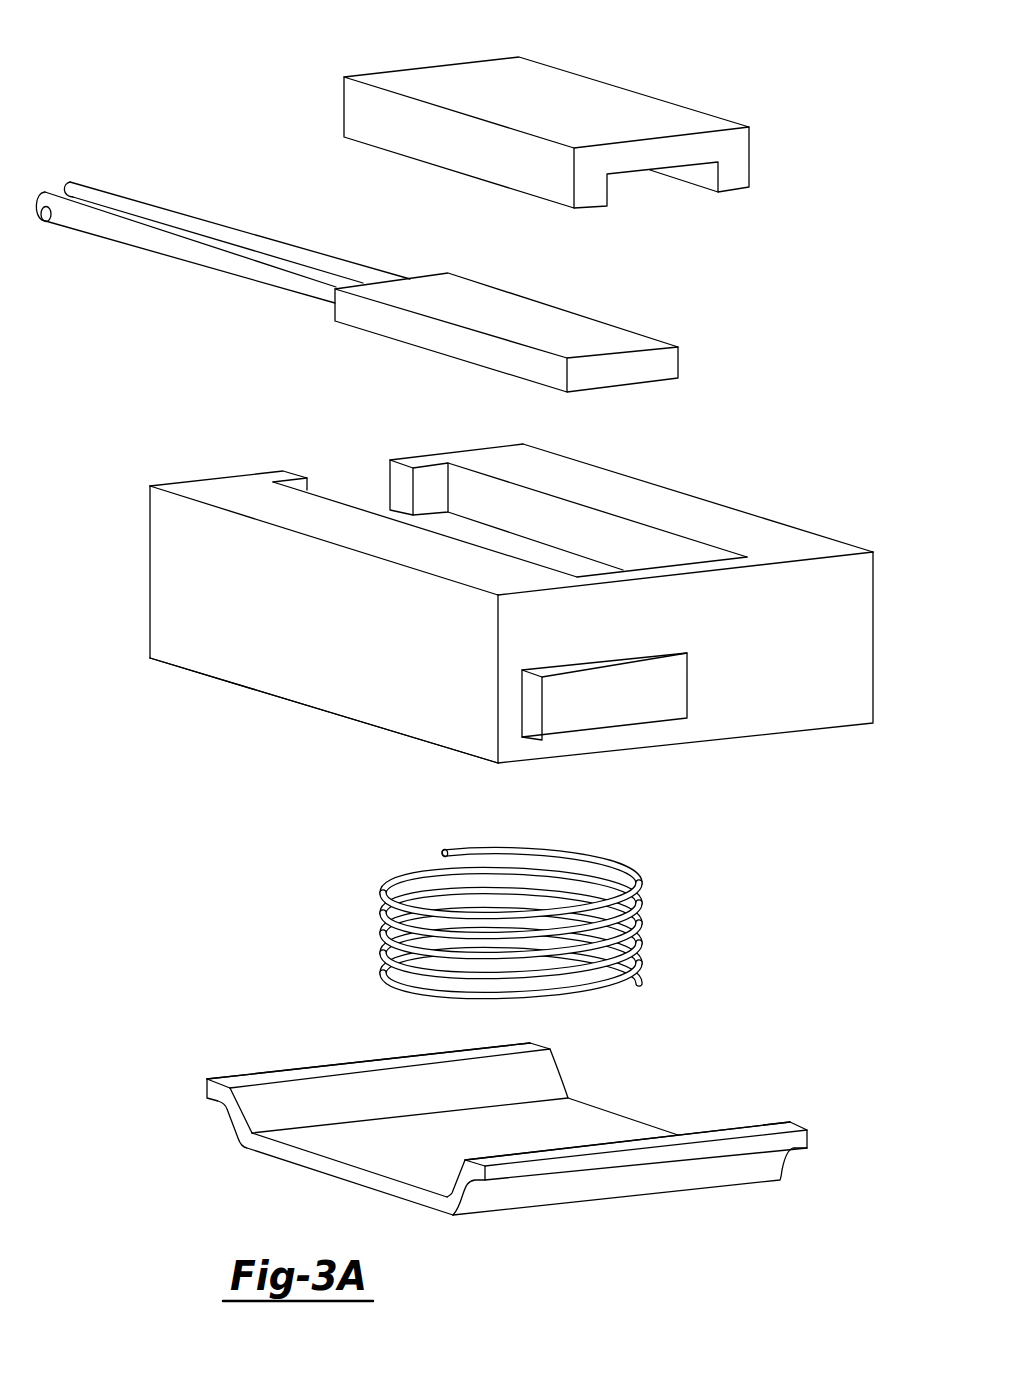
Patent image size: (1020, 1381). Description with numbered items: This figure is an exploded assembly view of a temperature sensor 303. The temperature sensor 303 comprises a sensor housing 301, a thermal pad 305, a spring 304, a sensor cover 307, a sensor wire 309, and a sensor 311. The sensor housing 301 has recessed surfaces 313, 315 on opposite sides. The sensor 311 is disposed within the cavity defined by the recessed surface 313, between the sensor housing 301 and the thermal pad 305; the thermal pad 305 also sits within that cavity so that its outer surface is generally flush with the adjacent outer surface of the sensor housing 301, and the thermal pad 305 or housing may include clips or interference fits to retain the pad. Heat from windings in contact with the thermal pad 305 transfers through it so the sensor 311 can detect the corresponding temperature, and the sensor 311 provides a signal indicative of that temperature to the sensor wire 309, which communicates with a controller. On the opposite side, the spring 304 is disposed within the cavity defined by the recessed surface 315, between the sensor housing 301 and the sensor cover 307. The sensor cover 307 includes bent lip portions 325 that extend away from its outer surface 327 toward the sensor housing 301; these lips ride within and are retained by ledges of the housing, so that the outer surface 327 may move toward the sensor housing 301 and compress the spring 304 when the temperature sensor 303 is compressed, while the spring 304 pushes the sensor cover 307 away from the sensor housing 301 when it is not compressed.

The temperature sensor 303 is at (220, 70).
The thermal pad 305 is at (593, 103).
The sensor wire 309 is at (233, 257).
The sensor 311 is at (553, 328).
The sensor housing 301 is at (470, 600).
The recessed surface 313 is at (547, 552).
The recessed surface 315 is at (278, 716).
The spring 304 is at (643, 880).
The sensor cover 307 is at (507, 1123).
The bent lip portions 325 is at (547, 1109).
The outer surface 327 is at (491, 1130).